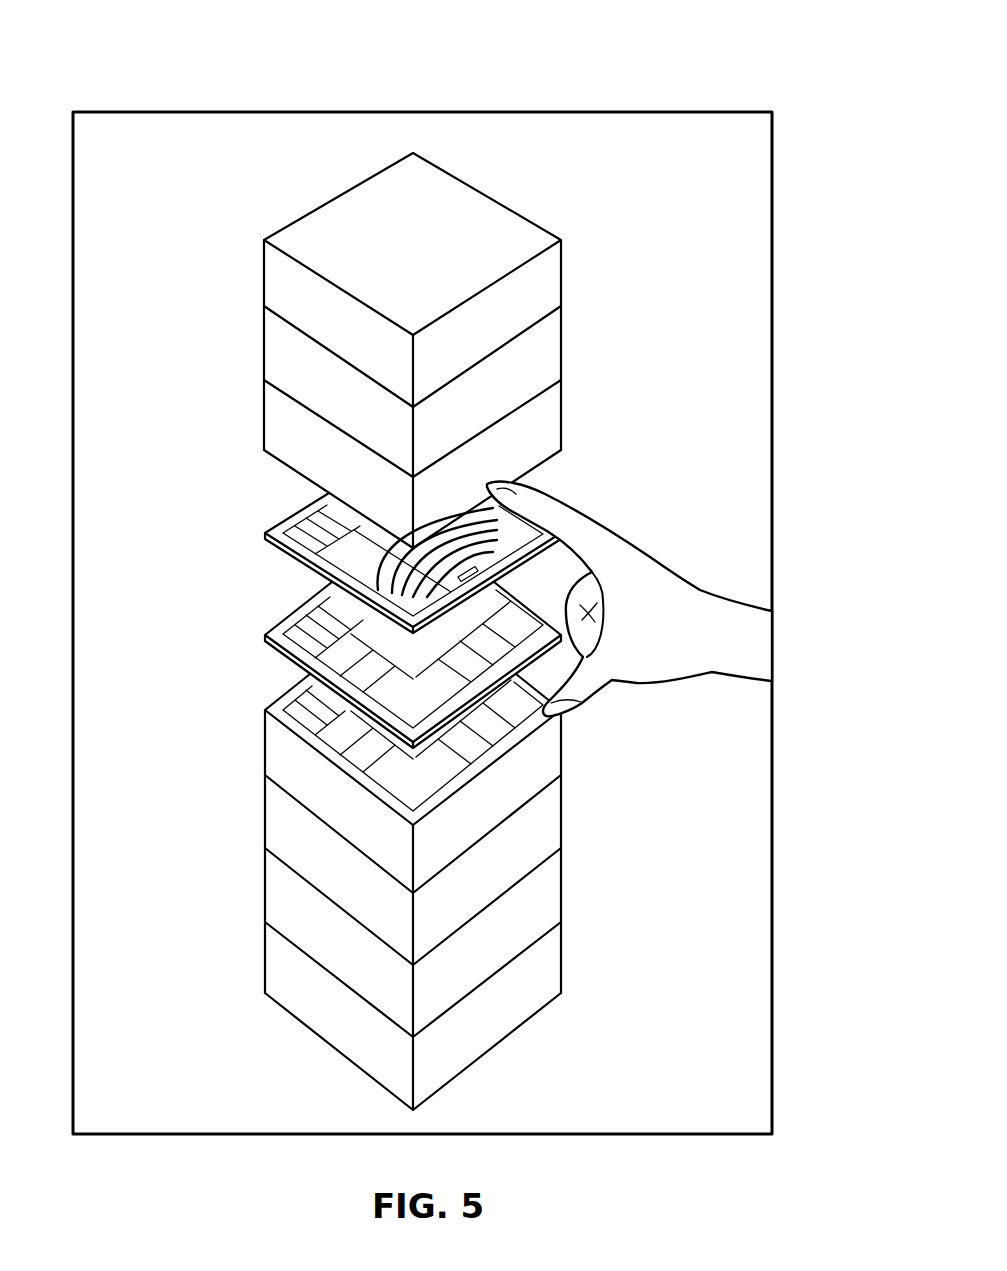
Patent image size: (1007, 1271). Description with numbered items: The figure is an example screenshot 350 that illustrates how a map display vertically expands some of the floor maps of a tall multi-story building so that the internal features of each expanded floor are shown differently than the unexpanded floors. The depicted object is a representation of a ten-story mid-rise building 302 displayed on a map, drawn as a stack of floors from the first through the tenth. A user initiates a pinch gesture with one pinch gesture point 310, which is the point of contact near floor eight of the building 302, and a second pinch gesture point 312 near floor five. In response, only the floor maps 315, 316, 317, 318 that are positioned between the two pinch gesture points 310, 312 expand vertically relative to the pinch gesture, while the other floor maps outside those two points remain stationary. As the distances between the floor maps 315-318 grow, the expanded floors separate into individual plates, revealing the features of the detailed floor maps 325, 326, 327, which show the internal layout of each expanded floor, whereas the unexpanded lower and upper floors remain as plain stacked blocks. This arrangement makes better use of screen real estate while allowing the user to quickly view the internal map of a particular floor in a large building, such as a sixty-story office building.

The example screenshot 350 is at (648, 86).
The ten-story mid-rise building 302 is at (241, 1059).
The floor map 318 is at (262, 452).
The floor map 317 is at (371, 557).
The detailed floor map 327 is at (303, 505).
The floor map 316 is at (371, 663).
The detailed floor map 326 is at (305, 598).
The floor map 315 is at (362, 738).
The detailed floor map 325 is at (287, 688).
The pinch gesture point 310 is at (629, 609).
The pinch gesture point 312 is at (578, 703).